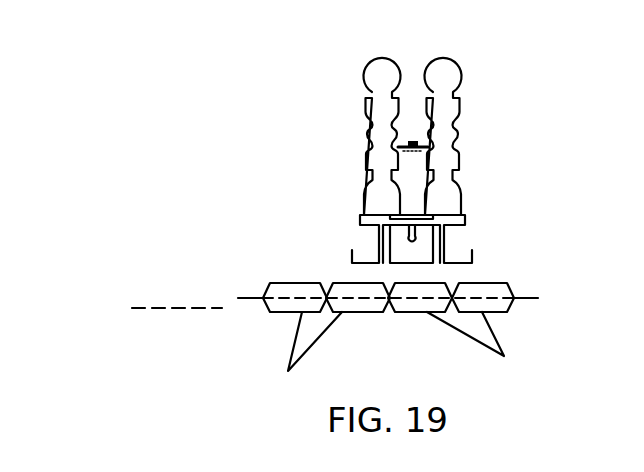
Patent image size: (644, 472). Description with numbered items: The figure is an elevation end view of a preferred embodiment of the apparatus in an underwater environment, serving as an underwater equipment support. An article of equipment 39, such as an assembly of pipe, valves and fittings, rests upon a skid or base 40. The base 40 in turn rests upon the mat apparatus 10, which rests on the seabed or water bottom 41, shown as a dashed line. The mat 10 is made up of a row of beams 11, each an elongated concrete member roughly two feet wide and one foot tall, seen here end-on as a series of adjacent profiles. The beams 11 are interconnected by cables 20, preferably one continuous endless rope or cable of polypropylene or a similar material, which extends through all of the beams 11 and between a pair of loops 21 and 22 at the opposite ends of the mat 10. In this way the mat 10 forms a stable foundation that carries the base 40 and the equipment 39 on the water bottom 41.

The equipment support 39 is at (457, 63).
The skid or base 40 is at (473, 262).
The mat apparatus 10 is at (509, 288).
The cable or rope 20 is at (285, 297).
The loop 21 is at (253, 300).
The loop 22 is at (523, 299).
The seabed or water bottom 41 is at (145, 308).
The beam or elongated concrete member 11 is at (402, 358).